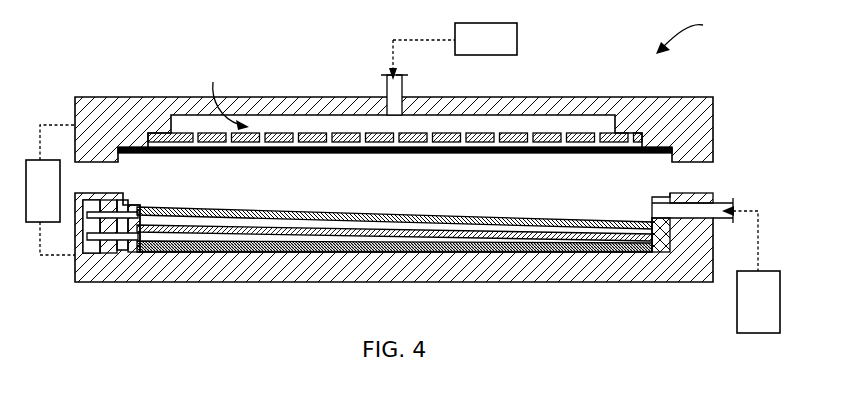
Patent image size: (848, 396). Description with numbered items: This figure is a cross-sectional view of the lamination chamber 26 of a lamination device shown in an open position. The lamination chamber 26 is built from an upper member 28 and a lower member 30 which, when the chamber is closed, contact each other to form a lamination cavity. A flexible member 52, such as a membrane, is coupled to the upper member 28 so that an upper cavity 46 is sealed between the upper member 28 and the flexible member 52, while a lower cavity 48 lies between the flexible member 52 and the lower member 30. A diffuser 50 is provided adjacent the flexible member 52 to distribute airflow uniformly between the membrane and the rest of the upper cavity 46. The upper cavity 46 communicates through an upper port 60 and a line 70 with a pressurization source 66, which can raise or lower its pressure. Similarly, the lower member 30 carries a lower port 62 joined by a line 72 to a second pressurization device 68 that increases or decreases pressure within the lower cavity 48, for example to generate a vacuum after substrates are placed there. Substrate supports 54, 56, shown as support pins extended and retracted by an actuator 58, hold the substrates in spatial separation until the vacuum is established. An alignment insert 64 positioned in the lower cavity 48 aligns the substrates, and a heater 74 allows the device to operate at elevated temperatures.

The lamination chamber 26 is at (691, 35).
The upper member 28 is at (157, 103).
The lower member 30 is at (570, 281).
The upper cavity 46 is at (227, 96).
The lower cavity 48 is at (160, 243).
The diffuser 50 is at (542, 137).
The flexible member 52 is at (580, 154).
The substrate support 54 is at (111, 205).
The substrate support 56 is at (109, 245).
The actuator 58 is at (92, 250).
The upper port 60 is at (381, 86).
The lower port 62 is at (725, 194).
The alignment insert 64 is at (660, 252).
The pressurization source 66 is at (517, 33).
The second pressurization device 68 is at (752, 334).
The line 70 is at (393, 38).
The line 72 is at (760, 228).
The heater 74 is at (33, 159).